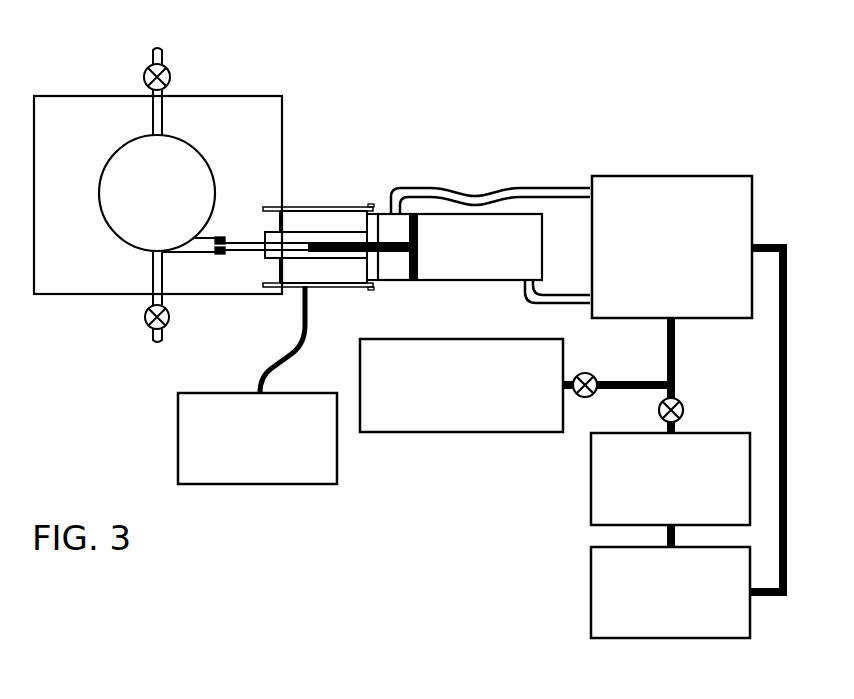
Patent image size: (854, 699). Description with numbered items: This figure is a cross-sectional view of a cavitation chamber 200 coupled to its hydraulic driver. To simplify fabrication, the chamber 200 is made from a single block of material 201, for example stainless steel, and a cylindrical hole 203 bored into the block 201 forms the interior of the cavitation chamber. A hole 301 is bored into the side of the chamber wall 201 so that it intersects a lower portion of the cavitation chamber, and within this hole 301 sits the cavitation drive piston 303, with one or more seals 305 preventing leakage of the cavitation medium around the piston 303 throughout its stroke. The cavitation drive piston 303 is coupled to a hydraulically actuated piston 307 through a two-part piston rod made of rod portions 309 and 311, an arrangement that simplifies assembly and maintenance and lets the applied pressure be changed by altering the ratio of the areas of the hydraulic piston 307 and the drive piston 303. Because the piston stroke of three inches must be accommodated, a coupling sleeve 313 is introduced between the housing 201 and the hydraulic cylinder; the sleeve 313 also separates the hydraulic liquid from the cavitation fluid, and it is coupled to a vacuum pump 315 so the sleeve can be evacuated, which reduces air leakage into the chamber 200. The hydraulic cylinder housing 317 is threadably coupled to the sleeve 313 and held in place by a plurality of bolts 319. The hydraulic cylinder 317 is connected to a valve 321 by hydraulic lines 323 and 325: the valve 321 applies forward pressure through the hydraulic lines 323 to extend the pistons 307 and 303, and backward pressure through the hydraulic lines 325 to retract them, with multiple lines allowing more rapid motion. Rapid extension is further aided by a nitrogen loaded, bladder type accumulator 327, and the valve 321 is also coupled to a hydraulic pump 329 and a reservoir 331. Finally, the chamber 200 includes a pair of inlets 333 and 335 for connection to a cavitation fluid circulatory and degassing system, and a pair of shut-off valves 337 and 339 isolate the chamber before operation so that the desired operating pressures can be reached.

The cavitation chamber 200 is at (297, 82).
The block of material 201 is at (84, 138).
The cylindrical hole 203 is at (157, 193).
The hole 301 is at (185, 256).
The cavitation drive piston 303 is at (216, 257).
The seals 305 is at (222, 237).
The hydraulically actuated piston 307 is at (418, 232).
The rod portion 309 is at (295, 243).
The rod portion 311 is at (332, 232).
The coupling sleeve 313 is at (313, 259).
The vacuum pump 315 is at (311, 485).
The hydraulic cylinder housing 317 is at (468, 282).
The bolts 319 is at (334, 287).
The valve 321 is at (707, 176).
The hydraulic lines 323 is at (570, 285).
The hydraulic lines 325 is at (440, 184).
The accumulator 327 is at (430, 433).
The hydraulic pump 329 is at (591, 480).
The reservoir 331 is at (591, 592).
The inlet 333 is at (163, 113).
The inlet 335 is at (150, 280).
The shut-off valve 337 is at (143, 78).
The shut-off valve 339 is at (144, 313).